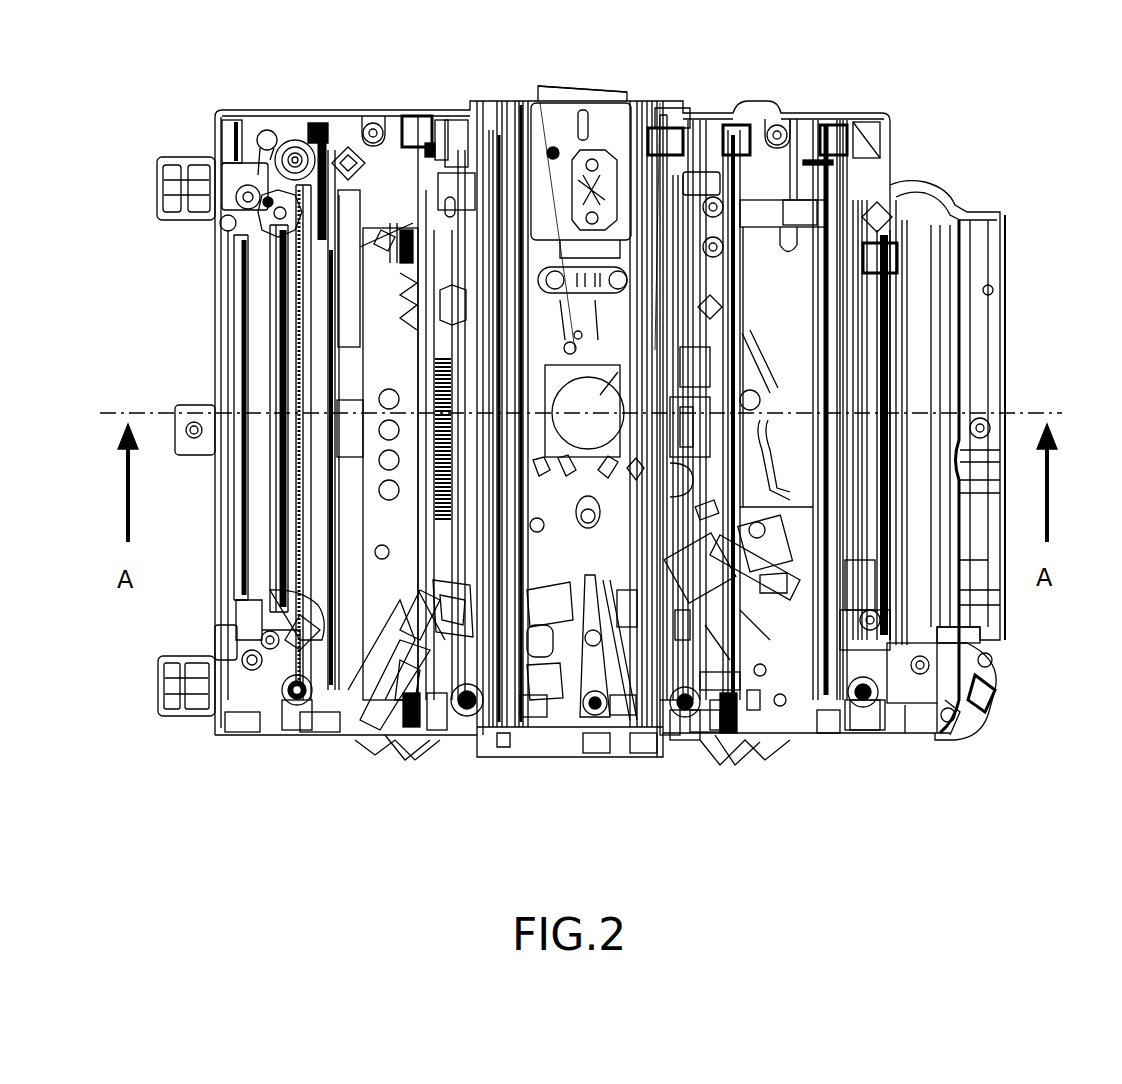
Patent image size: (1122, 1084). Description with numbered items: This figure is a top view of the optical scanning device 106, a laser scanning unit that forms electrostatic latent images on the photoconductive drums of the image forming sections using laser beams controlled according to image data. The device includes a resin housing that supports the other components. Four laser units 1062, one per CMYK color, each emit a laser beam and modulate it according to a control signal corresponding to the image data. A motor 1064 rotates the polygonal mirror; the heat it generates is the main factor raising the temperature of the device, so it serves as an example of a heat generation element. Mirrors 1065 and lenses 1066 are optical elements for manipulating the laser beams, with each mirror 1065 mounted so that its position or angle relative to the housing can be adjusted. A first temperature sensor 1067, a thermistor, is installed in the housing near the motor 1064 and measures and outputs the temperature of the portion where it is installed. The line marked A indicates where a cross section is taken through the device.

The optical scanning device 106 is at (190, 98).
The laser unit 1062 is at (410, 760).
The motor 1064 is at (655, 110).
The mirror 1065 is at (325, 740).
The lens 1066 is at (215, 638).
The first temperature sensor 1067 is at (538, 104).